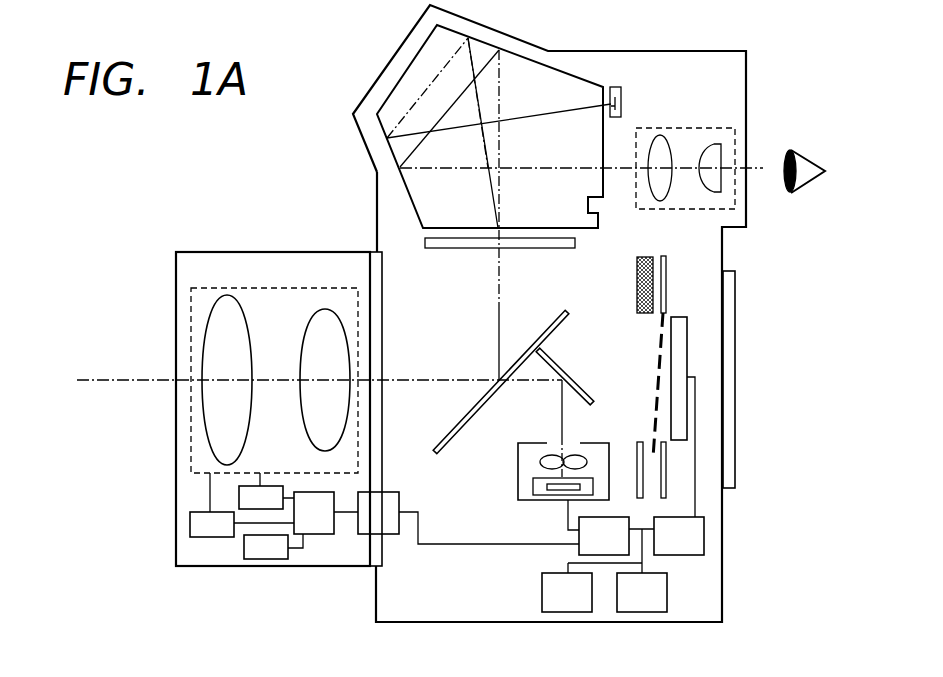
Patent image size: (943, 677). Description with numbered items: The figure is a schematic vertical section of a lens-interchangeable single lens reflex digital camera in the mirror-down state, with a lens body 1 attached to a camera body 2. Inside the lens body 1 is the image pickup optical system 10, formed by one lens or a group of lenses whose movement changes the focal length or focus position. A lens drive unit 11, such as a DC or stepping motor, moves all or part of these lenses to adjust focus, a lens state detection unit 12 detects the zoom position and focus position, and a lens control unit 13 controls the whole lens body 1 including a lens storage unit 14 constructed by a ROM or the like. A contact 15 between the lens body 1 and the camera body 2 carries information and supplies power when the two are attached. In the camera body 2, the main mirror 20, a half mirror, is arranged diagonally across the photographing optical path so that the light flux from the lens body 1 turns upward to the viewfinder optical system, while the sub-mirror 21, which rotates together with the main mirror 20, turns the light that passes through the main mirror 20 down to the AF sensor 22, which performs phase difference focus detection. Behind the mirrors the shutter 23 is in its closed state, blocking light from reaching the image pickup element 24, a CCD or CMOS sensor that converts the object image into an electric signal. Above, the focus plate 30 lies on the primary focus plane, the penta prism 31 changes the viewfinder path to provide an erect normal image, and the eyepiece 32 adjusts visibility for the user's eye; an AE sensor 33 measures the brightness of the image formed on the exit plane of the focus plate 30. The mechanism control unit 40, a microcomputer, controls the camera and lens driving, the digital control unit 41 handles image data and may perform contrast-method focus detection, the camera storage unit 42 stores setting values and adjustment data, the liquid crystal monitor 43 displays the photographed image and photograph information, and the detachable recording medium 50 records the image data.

The lens body 1 is at (278, 252).
The camera body 2 is at (387, 65).
The image pickup optical system 10 is at (212, 288).
The lens drive unit 11 is at (209, 527).
The lens state detection unit 12 is at (253, 497).
The lens control unit 13 is at (319, 525).
The lens storage unit 14 is at (260, 553).
The contact 15 is at (387, 527).
The main mirror 20 is at (533, 338).
The sub-mirror 21 is at (560, 367).
The AF sensor 22 is at (518, 477).
The shutter 23 is at (667, 470).
The image pickup element 24 is at (687, 331).
The focus plate 30 is at (444, 248).
The penta prism 31 is at (388, 137).
The eyepiece 32 is at (686, 128).
The AE sensor 33 is at (617, 87).
The mechanism control unit 40 is at (593, 540).
The digital control unit 41 is at (690, 535).
The camera storage unit 42 is at (657, 593).
The liquid crystal monitor 43 is at (735, 290).
The recording medium 50 is at (557, 593).